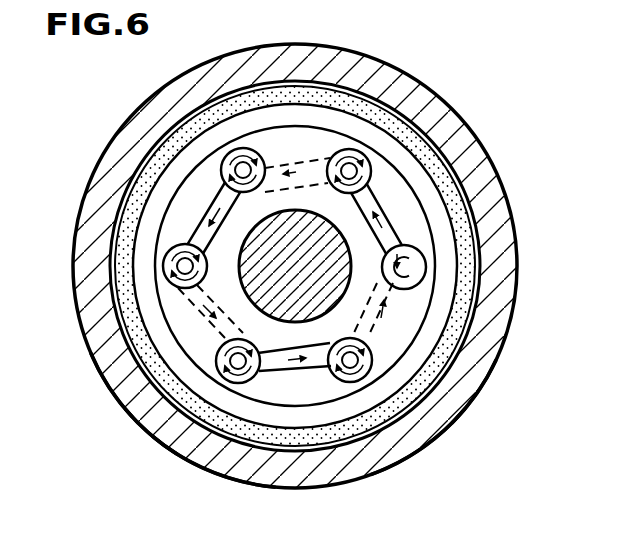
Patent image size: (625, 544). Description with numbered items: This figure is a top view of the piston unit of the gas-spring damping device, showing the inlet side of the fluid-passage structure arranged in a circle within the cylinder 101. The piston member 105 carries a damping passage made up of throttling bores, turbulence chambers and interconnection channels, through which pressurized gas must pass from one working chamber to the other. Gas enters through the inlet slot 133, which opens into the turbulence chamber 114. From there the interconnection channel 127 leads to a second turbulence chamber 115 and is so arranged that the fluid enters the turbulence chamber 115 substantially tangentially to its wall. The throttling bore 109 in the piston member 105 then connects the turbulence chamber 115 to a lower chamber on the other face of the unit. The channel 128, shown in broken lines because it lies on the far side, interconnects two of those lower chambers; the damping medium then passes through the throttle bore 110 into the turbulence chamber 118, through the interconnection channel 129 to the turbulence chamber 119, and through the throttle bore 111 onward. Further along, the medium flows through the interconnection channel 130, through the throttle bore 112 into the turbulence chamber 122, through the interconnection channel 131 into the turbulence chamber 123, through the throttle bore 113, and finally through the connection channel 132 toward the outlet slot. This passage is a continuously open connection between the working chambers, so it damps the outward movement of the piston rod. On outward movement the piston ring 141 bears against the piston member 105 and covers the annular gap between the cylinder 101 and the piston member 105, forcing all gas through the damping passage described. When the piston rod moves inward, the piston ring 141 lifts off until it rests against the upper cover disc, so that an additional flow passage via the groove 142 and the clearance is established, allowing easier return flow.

The cylinder 101 is at (450, 123).
The throttling bore 109 is at (421, 108).
The turbulence chamber 115 is at (455, 150).
The interconnection channel 127 is at (458, 200).
The turbulence chamber 114 is at (440, 231).
The groove 142 is at (433, 318).
The turbulence chamber 118 is at (220, 160).
The throttle bore 110 is at (250, 150).
The piston ring 141 is at (372, 173).
The inlet slot 133 is at (417, 247).
The turbulence chamber 119 is at (170, 243).
The throttle bore 111 is at (180, 273).
The interconnection channel 129 is at (200, 195).
The channel 128 is at (320, 157).
The interconnection channel 130 is at (195, 347).
The interconnection channel 131 is at (243, 455).
The piston member 105 is at (122, 378).
The connection channel 132 is at (467, 387).
The throttle bore 113 is at (443, 417).
The turbulence chamber 123 is at (397, 457).
The turbulence chamber 122 is at (150, 433).
The throttle bore 112 is at (171, 450).